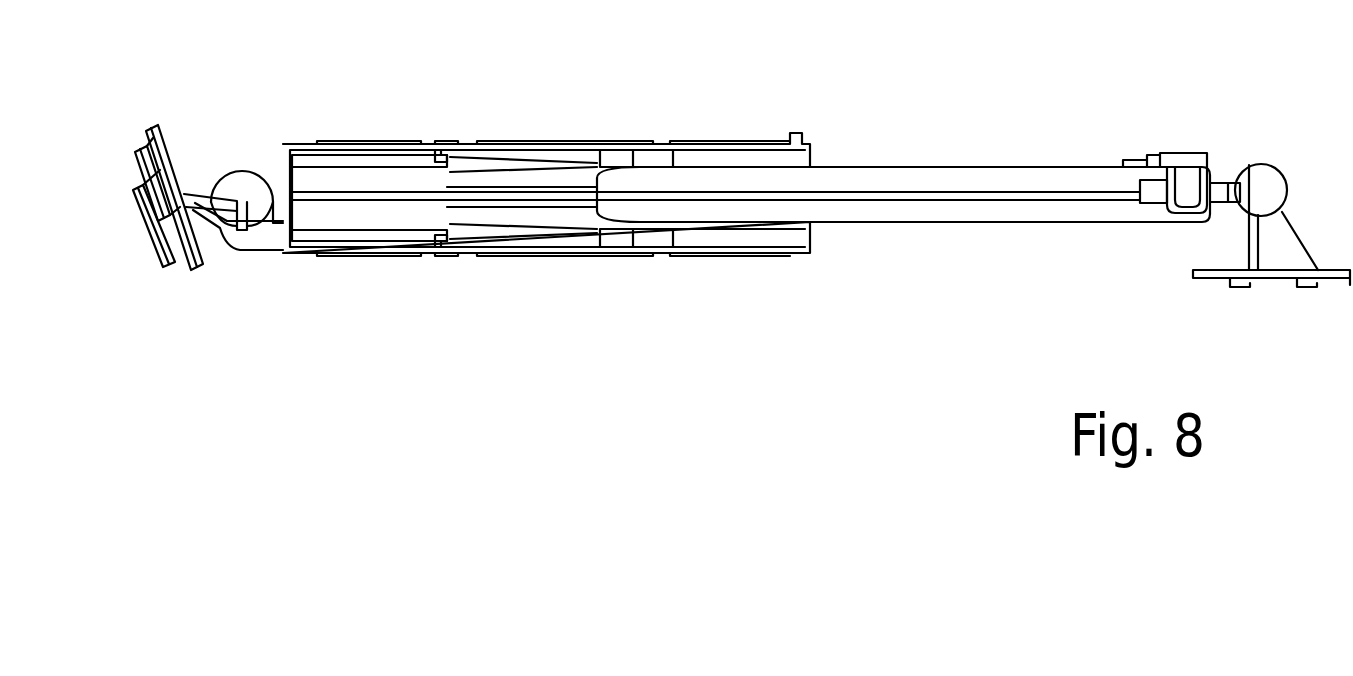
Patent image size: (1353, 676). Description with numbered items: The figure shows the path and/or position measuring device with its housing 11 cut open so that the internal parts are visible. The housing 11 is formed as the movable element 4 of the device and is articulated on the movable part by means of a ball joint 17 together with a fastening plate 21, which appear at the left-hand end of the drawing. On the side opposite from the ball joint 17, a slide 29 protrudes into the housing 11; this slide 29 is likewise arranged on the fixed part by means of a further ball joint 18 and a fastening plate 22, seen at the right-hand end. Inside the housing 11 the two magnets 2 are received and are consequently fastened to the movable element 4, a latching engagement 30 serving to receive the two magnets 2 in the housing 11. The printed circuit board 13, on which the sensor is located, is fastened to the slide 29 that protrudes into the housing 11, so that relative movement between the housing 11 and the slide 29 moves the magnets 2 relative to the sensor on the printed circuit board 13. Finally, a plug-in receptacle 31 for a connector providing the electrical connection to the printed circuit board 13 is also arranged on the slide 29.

The magnet 2 is at (465, 268).
The movable element 4 is at (368, 228).
The housing 11 is at (395, 143).
The printed circuit board 13 is at (888, 200).
The ball joint 17 is at (243, 182).
The ball joint 18 is at (1273, 187).
The fastening plate 21 is at (153, 228).
The fastening plate 22 is at (1270, 242).
The slide 29 is at (1000, 178).
The latching engagement 30 is at (452, 152).
The plug-in receptacle 31 is at (1188, 173).